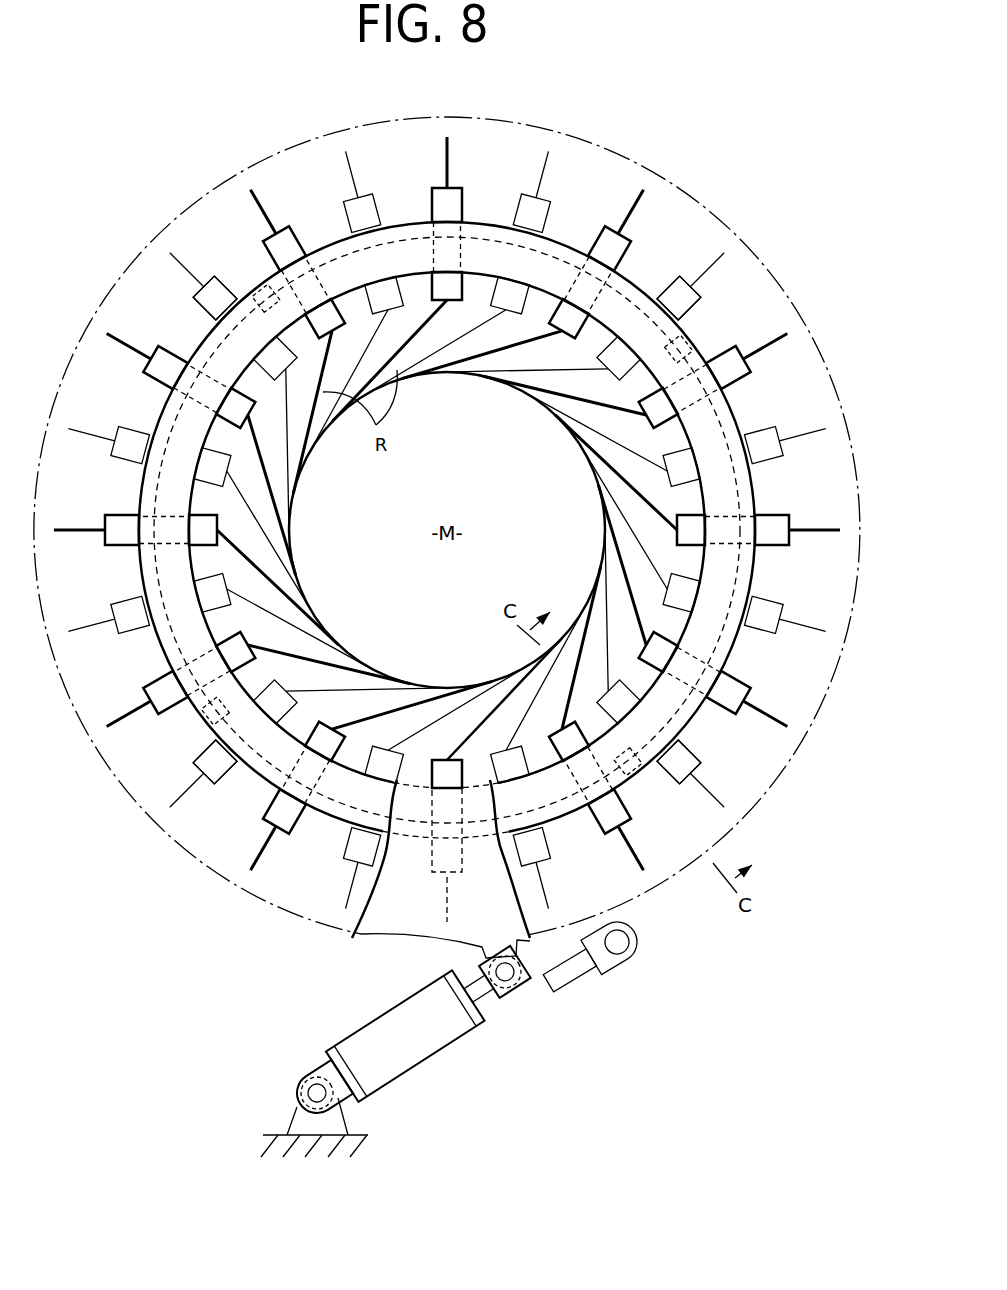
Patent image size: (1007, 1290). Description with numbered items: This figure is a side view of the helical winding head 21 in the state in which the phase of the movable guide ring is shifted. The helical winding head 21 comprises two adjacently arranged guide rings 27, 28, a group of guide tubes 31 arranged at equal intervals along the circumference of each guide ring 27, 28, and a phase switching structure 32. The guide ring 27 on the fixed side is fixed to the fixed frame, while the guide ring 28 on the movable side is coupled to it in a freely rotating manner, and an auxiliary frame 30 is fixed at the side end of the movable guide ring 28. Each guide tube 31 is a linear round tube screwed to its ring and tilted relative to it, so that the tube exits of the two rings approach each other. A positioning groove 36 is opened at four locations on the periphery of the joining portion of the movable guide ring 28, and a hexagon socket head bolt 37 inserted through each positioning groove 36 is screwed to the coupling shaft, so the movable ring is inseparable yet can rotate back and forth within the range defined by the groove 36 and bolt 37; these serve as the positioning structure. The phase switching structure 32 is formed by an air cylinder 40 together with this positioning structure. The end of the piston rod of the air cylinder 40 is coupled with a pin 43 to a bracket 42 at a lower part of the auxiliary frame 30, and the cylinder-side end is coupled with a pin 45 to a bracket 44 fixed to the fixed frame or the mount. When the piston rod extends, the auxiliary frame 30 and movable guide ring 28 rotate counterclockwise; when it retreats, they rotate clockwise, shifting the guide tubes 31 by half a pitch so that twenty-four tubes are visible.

The helical winding head 21 is at (225, 877).
The guide ring 27 is at (389, 530).
The guide ring 28 is at (150, 637).
The auxiliary frame 30 is at (128, 807).
The guide tube 31 is at (520, 217).
The phase switching structure 32 is at (432, 1036).
The positioning groove 36 is at (212, 320).
The hexagon socket head bolt 37 is at (263, 298).
The air cylinder 40 is at (405, 1000).
The bracket 42 is at (530, 977).
The pin 43 is at (505, 985).
The bracket 44 is at (302, 1123).
The pin 45 is at (318, 1078).